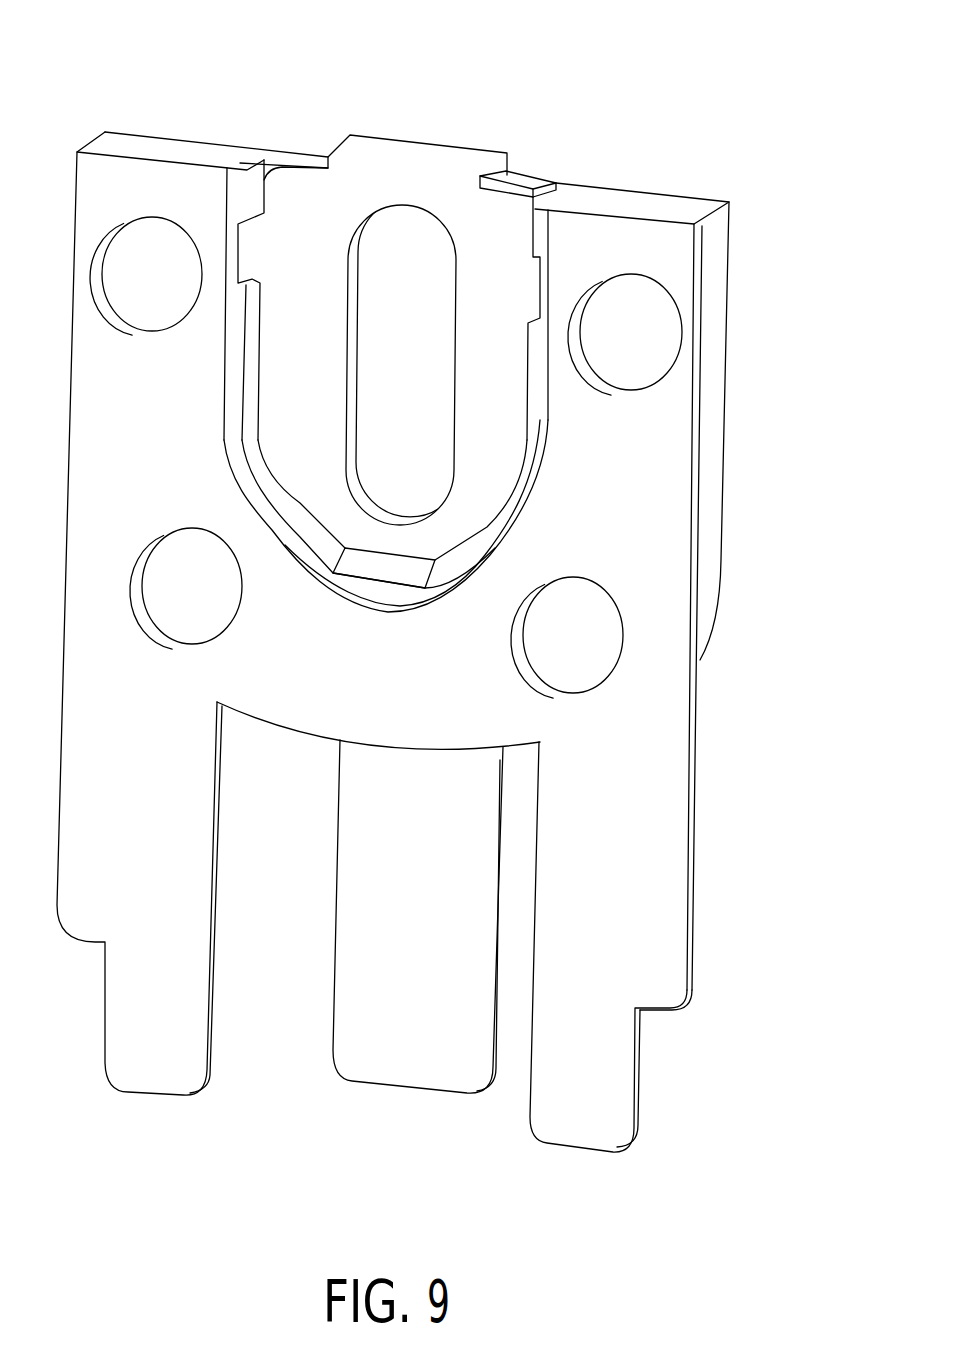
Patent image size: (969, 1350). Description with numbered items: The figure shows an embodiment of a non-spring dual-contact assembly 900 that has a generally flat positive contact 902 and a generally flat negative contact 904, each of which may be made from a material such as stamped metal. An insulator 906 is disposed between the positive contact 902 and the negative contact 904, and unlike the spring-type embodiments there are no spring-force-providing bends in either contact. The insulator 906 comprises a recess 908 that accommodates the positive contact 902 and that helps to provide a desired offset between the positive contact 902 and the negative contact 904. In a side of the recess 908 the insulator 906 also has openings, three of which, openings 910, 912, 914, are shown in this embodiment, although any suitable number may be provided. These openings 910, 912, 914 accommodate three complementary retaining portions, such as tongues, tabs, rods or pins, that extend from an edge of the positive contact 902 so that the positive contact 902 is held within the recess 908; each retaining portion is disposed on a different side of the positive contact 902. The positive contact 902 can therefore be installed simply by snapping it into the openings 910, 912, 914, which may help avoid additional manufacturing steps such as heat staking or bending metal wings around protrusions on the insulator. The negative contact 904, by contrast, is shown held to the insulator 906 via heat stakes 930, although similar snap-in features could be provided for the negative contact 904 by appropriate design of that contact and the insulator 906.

The non-spring dual-contact assembly 900 is at (776, 215).
The positive contact 902 is at (498, 212).
The negative contact 904 is at (672, 560).
The insulator 906 is at (718, 455).
The recess 908 is at (259, 247).
The opening 910 is at (329, 234).
The opening 912 is at (528, 289).
The opening 914 is at (412, 553).
The heat stakes 930 is at (648, 350).